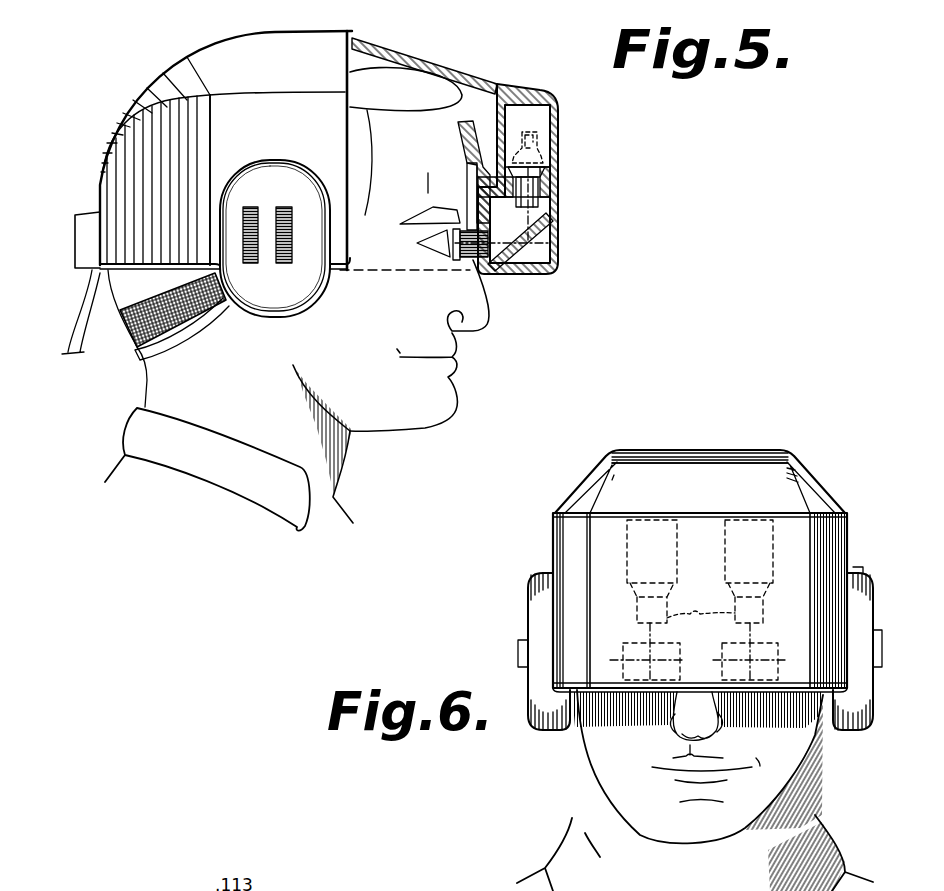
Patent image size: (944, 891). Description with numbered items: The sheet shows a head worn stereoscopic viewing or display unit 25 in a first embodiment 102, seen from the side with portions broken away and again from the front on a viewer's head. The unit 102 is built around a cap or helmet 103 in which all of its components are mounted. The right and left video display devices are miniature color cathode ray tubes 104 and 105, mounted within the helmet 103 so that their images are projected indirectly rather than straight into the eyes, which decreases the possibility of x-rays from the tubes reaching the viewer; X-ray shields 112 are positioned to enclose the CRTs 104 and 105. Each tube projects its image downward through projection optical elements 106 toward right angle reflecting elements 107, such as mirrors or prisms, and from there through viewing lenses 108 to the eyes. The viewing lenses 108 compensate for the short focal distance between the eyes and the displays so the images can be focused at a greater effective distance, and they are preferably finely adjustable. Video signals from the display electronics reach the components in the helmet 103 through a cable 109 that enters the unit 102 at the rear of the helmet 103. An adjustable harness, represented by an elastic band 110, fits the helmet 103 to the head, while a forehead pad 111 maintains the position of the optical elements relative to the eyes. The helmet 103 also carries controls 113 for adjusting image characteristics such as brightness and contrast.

In FIG. 5, the head worn stereoscopic display unit 25 is at (521, 79).
In FIG. 6, the head worn stereoscopic display unit 25 is at (578, 480).
In FIG. 5, the first embodiment 102 is at (461, 59).
In FIG. 6, the first embodiment 102 is at (792, 451).
In FIG. 5, the helmet 103 is at (311, 42).
In FIG. 6, the helmet 103 is at (657, 462).
In FIG. 5, the right cathode ray tube 104 is at (551, 145).
In FIG. 6, the right cathode ray tube 104 is at (773, 508).
In FIG. 6, the left cathode ray tube 105 is at (676, 522).
In FIG. 6, the projection optical elements 106 is at (701, 605).
In FIG. 5, the right angle reflecting elements 107 is at (542, 229).
In FIG. 6, the right angle reflecting elements 107 is at (773, 660).
In FIG. 5, the viewing lenses 108 is at (467, 273).
In FIG. 5, the cable 109 is at (86, 290).
In FIG. 5, the elastic band 110 is at (133, 344).
In FIG. 5, the forehead pad 111 is at (466, 138).
In FIG. 5, the X-ray shields 112 is at (552, 122).
In FIG. 5, the controls 113 is at (262, 212).
In FIG. 6, the controls 113 is at (528, 633).